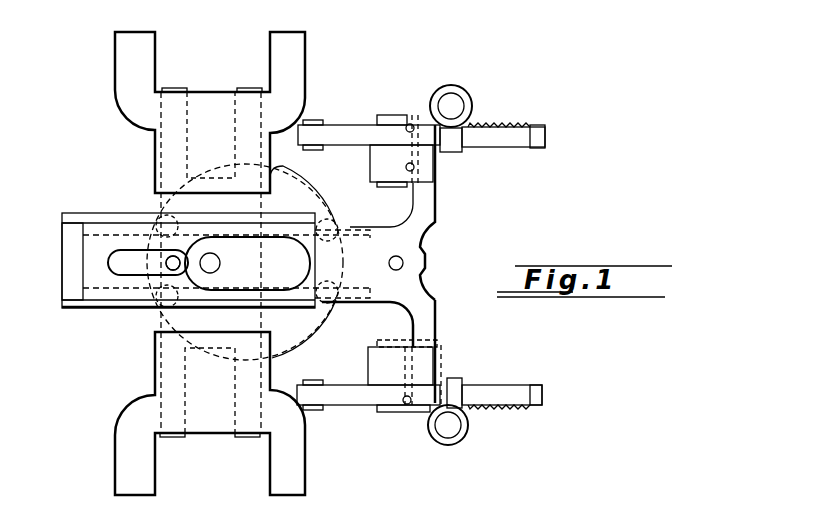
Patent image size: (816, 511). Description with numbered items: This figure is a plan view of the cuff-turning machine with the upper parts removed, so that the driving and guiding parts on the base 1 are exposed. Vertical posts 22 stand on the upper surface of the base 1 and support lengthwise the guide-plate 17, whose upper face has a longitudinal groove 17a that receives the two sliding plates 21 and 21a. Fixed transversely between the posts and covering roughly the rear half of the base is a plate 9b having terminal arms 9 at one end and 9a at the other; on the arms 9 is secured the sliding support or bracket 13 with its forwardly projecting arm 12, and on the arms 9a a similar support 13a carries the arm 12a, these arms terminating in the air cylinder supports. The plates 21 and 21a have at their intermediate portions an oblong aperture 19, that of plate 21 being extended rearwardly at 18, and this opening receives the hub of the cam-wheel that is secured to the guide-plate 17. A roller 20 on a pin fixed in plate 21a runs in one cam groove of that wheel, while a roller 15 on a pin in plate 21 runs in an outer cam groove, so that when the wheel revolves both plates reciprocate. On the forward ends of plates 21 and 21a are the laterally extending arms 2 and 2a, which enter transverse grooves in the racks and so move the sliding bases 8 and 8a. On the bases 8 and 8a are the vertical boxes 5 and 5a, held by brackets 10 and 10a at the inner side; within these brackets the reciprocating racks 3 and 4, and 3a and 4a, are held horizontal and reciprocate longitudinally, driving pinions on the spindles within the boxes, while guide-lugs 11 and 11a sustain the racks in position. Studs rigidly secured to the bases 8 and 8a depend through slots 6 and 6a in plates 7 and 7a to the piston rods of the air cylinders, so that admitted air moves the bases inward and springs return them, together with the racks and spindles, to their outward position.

The base 1 is at (307, 337).
The laterally extending arm 2 is at (433, 197).
The laterally extending arm 2a is at (437, 331).
The reciprocating rack 3 is at (546, 148).
The reciprocating rack 3a is at (545, 400).
The reciprocating rack 4 is at (546, 130).
The reciprocating rack 4a is at (545, 392).
The vertical box 5 is at (462, 95).
The vertical box 5a is at (438, 436).
The slot 6 is at (414, 118).
The slot 6a is at (407, 406).
The plate 7 is at (389, 117).
The plate 7a is at (447, 345).
The sliding base 8 is at (363, 125).
The sliding base 8a is at (360, 410).
The terminal arm 9 is at (172, 90).
The terminal arm 9a is at (242, 440).
The plate 9b is at (174, 199).
The bracket 10 is at (468, 147).
The bracket 10a is at (465, 386).
The guide-lug 11 is at (317, 147).
The guide-lug 11a is at (315, 386).
The forwardly projecting arm 12 is at (360, 150).
The arm 12a is at (348, 370).
The sliding support or bracket 13 is at (140, 118).
The sliding support 13a is at (135, 416).
The roller 15 is at (404, 263).
The guide-plate 17 is at (70, 305).
The longitudinal groove 17a is at (68, 232).
The rearward extension of aperture 18 is at (126, 250).
The oblong aperture 19 is at (276, 237).
The roller 20 is at (168, 268).
The sliding plate 21 is at (95, 285).
The sliding plate 21a is at (128, 262).
The vertical posts 22 is at (164, 304).